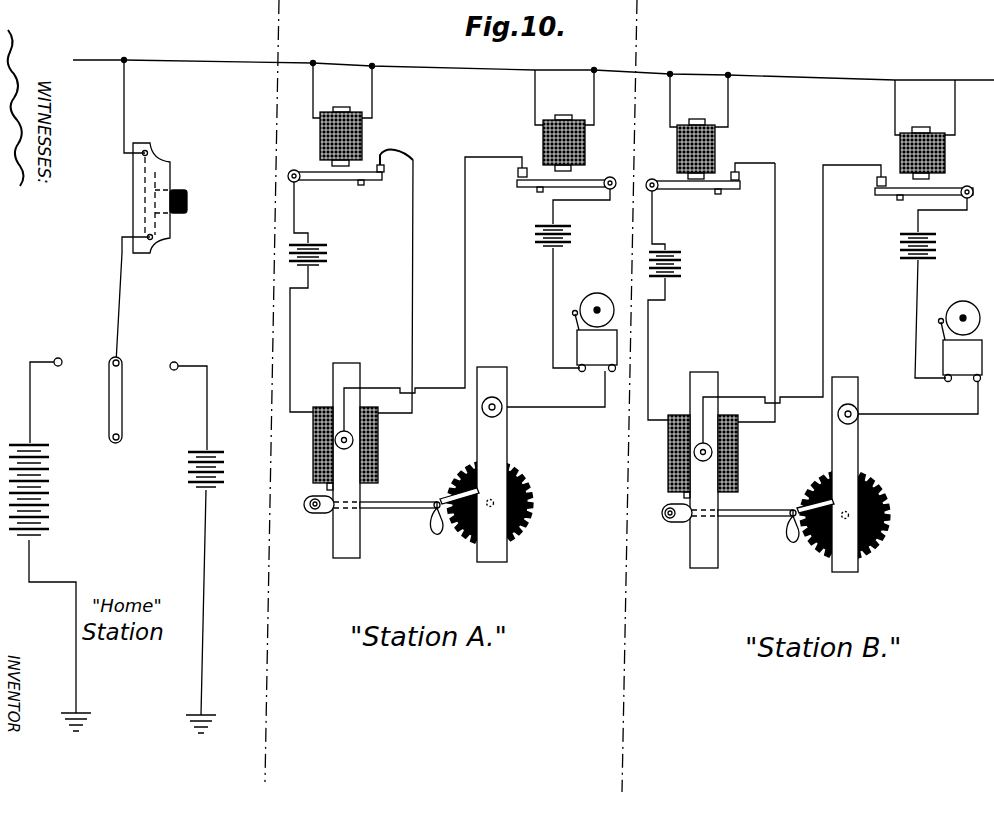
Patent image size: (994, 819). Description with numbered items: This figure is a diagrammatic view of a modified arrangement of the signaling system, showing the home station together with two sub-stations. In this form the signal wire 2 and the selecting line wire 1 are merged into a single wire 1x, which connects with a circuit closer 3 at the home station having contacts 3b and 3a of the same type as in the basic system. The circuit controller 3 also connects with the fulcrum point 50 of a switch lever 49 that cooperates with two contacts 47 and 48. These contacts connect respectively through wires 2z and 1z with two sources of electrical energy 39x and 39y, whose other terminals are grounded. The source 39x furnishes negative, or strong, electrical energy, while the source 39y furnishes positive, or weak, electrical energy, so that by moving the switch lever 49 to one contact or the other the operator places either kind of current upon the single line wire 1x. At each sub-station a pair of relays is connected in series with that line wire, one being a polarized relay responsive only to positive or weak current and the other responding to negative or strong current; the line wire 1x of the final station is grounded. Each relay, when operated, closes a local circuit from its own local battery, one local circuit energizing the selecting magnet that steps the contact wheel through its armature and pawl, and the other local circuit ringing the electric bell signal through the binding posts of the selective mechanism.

The single line wire 1x is at (198, 60).
The selecting line wire 1 is at (218, 392).
The signal wire 2 is at (38, 393).
The wire 1z is at (204, 590).
The wire 2z is at (76, 582).
The circuit closer 3 is at (145, 156).
The contact 3a is at (147, 151).
The contact 3b is at (152, 240).
The contact 47 is at (60, 358).
The contact 48 is at (176, 362).
The switch lever 49 is at (122, 405).
The fulcrum point 50 is at (119, 360).
The source of negative electrical energy 39x is at (45, 490).
The source of positive electrical energy 39y is at (183, 473).